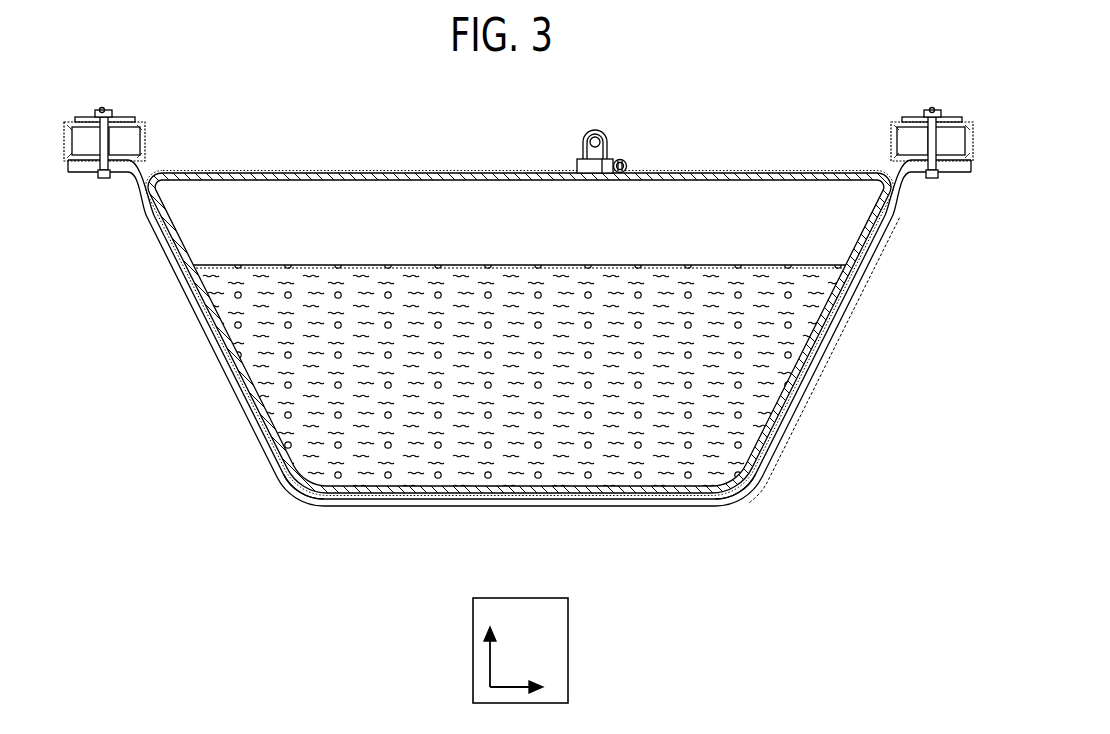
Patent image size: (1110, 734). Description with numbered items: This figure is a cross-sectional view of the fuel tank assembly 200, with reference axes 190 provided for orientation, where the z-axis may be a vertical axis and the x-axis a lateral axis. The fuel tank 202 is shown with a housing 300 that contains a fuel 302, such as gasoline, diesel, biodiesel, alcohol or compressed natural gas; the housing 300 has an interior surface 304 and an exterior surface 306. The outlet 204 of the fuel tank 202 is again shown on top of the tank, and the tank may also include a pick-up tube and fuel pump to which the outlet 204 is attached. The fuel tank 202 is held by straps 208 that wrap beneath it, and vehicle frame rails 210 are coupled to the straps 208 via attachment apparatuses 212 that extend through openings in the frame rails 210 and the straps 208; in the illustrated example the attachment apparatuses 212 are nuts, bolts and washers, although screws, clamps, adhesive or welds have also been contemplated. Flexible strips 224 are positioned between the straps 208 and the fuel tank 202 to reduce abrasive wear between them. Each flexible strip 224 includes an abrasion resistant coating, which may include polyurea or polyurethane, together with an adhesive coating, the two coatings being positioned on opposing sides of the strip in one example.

The reference axes 190 is at (473, 650).
The fuel tank assembly 200 is at (800, 86).
The fuel tank 202 is at (736, 138).
The outlet 204 is at (599, 126).
The straps 208 is at (802, 439).
The vehicle frame rails 210 is at (152, 123).
The attachment apparatuses 212 is at (102, 110).
The flexible strips 224 is at (297, 483).
The housing 300 is at (398, 171).
The fuel 302 is at (513, 380).
The interior surface 304 is at (366, 181).
The exterior surface 306 is at (346, 172).